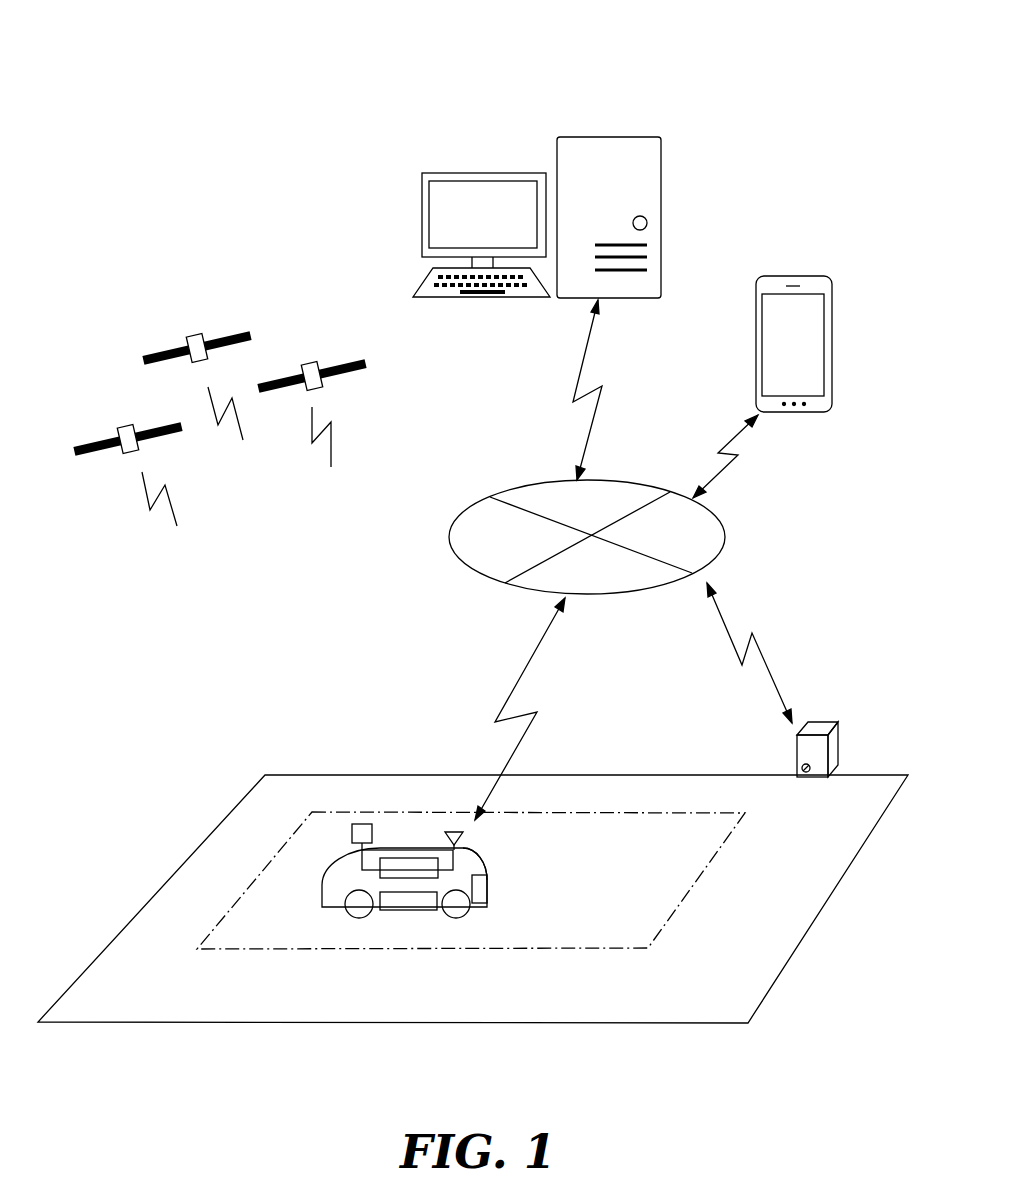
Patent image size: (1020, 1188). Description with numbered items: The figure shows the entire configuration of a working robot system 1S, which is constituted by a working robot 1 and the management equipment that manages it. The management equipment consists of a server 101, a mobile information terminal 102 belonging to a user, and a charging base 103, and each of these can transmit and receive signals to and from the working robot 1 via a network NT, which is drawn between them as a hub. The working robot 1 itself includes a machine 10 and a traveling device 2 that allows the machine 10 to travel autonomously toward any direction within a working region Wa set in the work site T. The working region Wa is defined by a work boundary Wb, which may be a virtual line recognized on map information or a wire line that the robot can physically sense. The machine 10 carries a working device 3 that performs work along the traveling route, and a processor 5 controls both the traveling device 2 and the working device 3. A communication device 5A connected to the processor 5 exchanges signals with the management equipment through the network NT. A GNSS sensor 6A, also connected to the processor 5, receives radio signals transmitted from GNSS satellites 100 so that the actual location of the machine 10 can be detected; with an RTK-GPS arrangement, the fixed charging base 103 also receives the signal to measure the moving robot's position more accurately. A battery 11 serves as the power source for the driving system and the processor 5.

The working robot system 1S is at (302, 90).
The GNSS satellite 100 is at (176, 292).
The server 101 is at (642, 137).
The mobile information terminal 102 is at (815, 276).
The charging base 103 is at (820, 722).
The network NT is at (724, 528).
The ground surface T is at (562, 1028).
The work boundary Wb is at (612, 812).
The working region Wa is at (646, 884).
The working robot 1 is at (407, 834).
The traveling device 2 is at (462, 920).
The working device 3 is at (380, 893).
The processor 5 is at (393, 847).
The communication device 5A is at (447, 830).
The GNSS sensor 6A is at (352, 833).
The machine 10 is at (477, 855).
The battery 11 is at (487, 888).